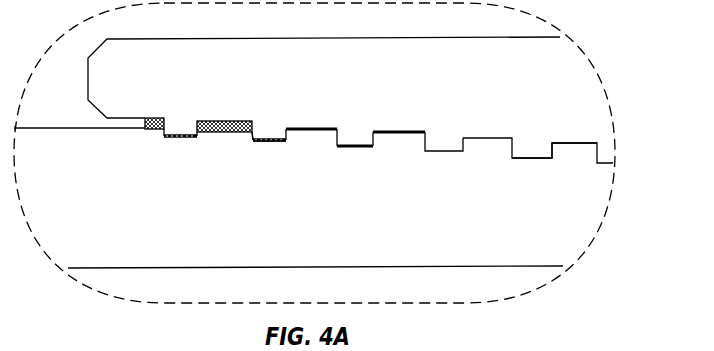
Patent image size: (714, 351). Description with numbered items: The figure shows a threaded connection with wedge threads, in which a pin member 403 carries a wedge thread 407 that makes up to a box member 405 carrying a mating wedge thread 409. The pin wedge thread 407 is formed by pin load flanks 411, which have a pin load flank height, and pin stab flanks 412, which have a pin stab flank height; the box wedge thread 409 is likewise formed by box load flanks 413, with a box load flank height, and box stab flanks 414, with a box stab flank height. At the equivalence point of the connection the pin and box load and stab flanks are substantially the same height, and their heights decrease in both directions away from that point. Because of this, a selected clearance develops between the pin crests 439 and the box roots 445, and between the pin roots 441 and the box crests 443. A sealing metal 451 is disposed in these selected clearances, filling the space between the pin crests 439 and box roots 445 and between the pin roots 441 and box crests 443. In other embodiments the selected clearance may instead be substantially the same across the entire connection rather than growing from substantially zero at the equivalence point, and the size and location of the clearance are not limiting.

The pin member 403 is at (108, 246).
The box member 405 is at (561, 64).
The wedge thread 407 is at (578, 167).
The wedge thread 409 is at (537, 128).
The pin load flanks 411 is at (288, 134).
The pin stab flanks 412 is at (272, 130).
The box load flanks 413 is at (250, 138).
The box stab flanks 414 is at (262, 127).
The pin crests 439 is at (398, 136).
The pin roots 441 is at (349, 147).
The box crests 443 is at (348, 145).
The box roots 445 is at (408, 132).
The sealing metal 451 is at (212, 122).